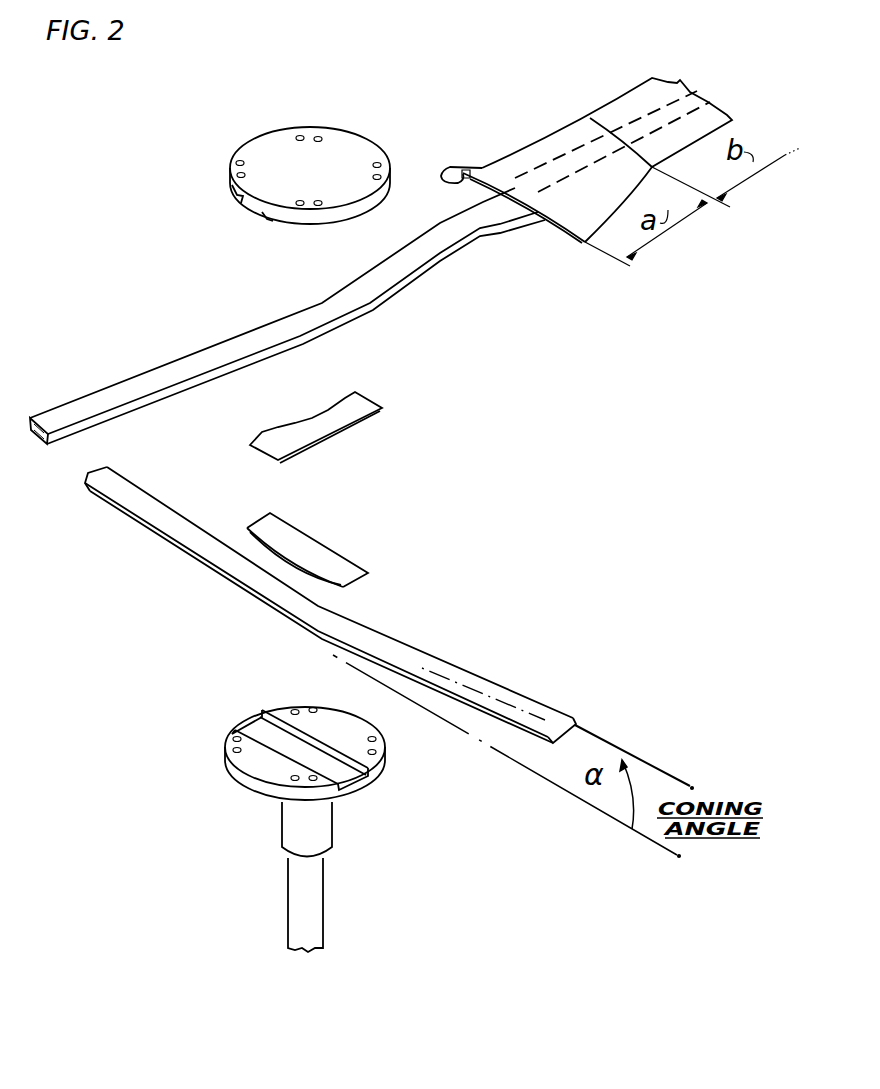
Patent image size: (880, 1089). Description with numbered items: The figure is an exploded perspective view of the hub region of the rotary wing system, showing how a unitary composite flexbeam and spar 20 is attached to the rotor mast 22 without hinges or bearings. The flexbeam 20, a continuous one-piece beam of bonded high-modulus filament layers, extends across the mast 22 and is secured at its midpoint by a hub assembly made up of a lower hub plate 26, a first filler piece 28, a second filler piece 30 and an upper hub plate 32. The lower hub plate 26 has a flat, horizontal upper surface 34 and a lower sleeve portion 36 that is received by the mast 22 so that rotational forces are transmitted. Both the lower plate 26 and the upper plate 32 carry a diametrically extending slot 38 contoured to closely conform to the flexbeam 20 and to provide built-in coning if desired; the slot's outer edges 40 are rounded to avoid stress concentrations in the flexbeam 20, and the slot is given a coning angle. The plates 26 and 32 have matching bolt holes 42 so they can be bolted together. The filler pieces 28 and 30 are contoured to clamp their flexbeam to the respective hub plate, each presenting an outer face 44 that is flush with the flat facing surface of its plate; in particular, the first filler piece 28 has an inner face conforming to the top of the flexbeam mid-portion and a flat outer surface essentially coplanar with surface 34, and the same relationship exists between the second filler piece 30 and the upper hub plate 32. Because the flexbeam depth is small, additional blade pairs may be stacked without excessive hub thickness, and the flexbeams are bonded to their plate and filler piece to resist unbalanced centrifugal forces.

The flexbeam and spar 20 is at (453, 665).
The rotor mast 22 is at (318, 903).
The lower hub plate 26 is at (230, 763).
The first filler piece 28 is at (353, 548).
The second filler piece 30 is at (373, 395).
The upper hub plate 32 is at (342, 147).
The upper surface 34 is at (268, 764).
The lower sleeve portion 36 is at (325, 822).
The slot 38 is at (258, 716).
The outer edges 40 is at (262, 727).
The bolt holes 42 is at (297, 703).
The outer face 44 is at (318, 507).